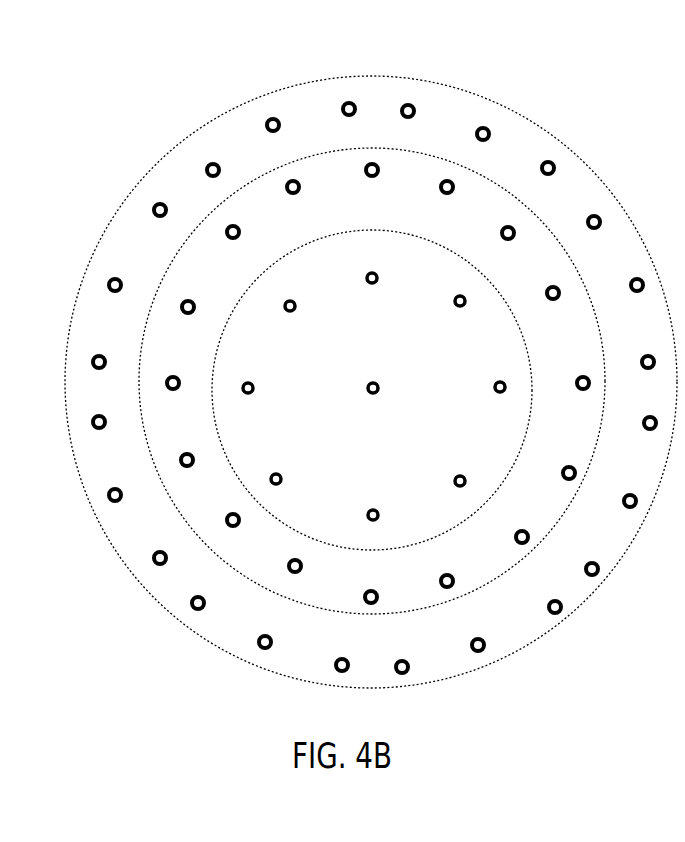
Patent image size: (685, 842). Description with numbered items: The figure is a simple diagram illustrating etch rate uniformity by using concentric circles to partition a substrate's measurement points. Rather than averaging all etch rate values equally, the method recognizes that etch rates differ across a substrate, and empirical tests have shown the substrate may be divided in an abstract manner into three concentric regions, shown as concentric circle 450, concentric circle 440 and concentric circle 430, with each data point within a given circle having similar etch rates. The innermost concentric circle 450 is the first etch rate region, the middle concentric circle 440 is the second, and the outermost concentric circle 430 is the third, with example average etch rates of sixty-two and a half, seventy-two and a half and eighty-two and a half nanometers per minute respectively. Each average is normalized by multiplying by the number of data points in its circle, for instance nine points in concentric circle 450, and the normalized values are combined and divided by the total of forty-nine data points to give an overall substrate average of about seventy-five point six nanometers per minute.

The concentric circle 430 is at (285, 96).
The concentric circle 440 is at (174, 258).
The concentric circle 450 is at (292, 530).